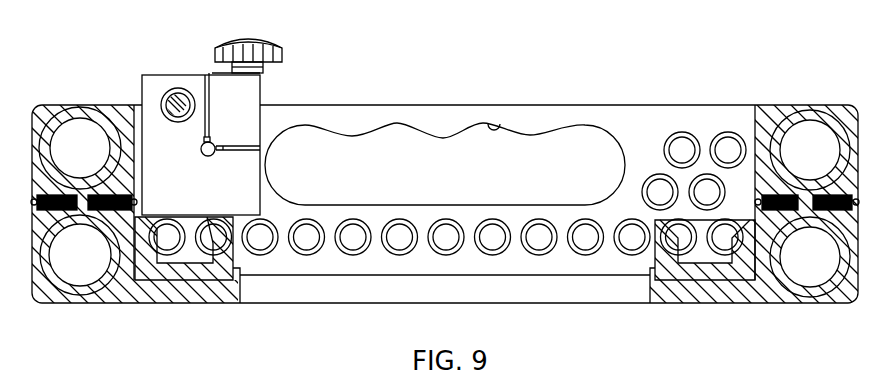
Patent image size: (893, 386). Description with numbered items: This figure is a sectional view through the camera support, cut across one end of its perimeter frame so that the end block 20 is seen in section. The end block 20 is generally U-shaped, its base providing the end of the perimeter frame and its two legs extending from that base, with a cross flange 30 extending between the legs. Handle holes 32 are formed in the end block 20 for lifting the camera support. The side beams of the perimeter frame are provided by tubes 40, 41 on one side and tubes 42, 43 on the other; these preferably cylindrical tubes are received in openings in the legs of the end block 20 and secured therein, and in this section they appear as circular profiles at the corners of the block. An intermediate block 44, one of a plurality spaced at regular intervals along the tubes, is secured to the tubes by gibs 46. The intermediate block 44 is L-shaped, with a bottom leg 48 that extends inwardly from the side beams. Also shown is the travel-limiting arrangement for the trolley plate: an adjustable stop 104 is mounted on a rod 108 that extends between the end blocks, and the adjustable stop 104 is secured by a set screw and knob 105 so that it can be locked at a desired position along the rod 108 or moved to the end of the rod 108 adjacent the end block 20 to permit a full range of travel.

The end block 20 is at (604, 97).
The cross flange 30 is at (378, 293).
The handle hole 32 is at (502, 122).
The tube 40 is at (792, 110).
The tube 41 is at (803, 300).
The tube 42 is at (62, 105).
The tube 43 is at (80, 303).
The intermediate block 44 is at (112, 105).
The gib 46 is at (97, 218).
The bottom leg 48 is at (207, 295).
The adjustable stop 104 is at (181, 75).
The knob 105 is at (252, 35).
The rod 108 is at (177, 118).